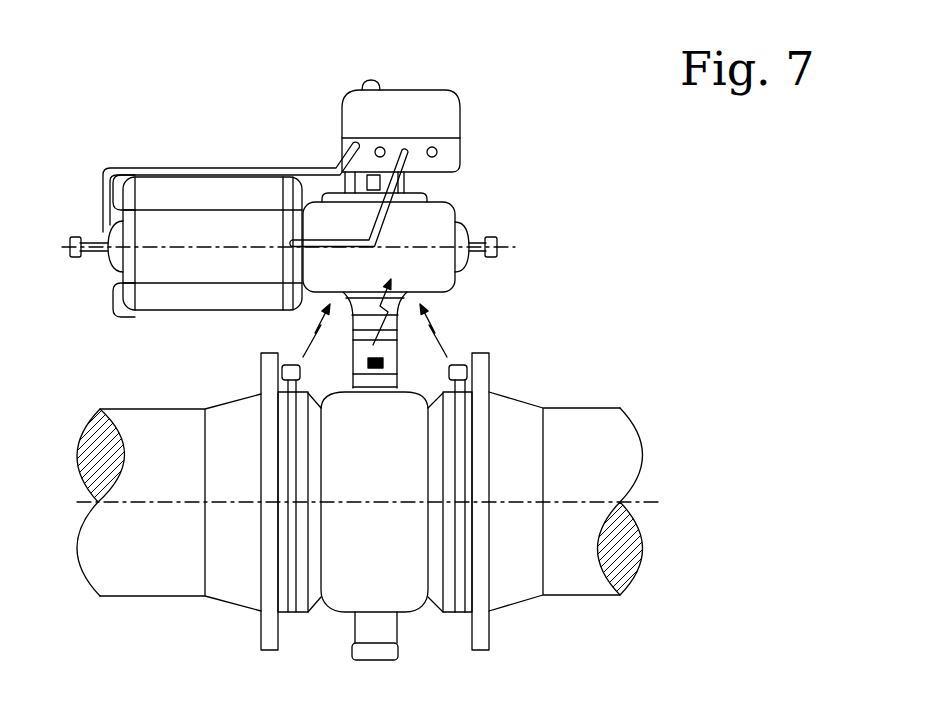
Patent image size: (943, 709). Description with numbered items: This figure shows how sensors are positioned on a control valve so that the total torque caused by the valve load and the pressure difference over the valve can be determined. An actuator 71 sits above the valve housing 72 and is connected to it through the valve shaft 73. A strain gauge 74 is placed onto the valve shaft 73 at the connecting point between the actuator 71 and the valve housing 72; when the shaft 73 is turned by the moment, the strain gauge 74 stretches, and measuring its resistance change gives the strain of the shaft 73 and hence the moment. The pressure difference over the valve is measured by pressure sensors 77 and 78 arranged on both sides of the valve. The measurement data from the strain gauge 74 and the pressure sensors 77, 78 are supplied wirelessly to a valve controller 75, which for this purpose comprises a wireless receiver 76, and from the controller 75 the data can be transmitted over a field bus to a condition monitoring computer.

The actuator 71 is at (455, 203).
The valve housing 72 is at (403, 613).
The valve shaft 73 is at (355, 362).
The strain gauge 74 is at (383, 362).
The valve controller 75 is at (461, 113).
The wireless receiver 76 is at (437, 152).
The pressure sensor 77 is at (291, 348).
The pressure sensor 78 is at (459, 348).